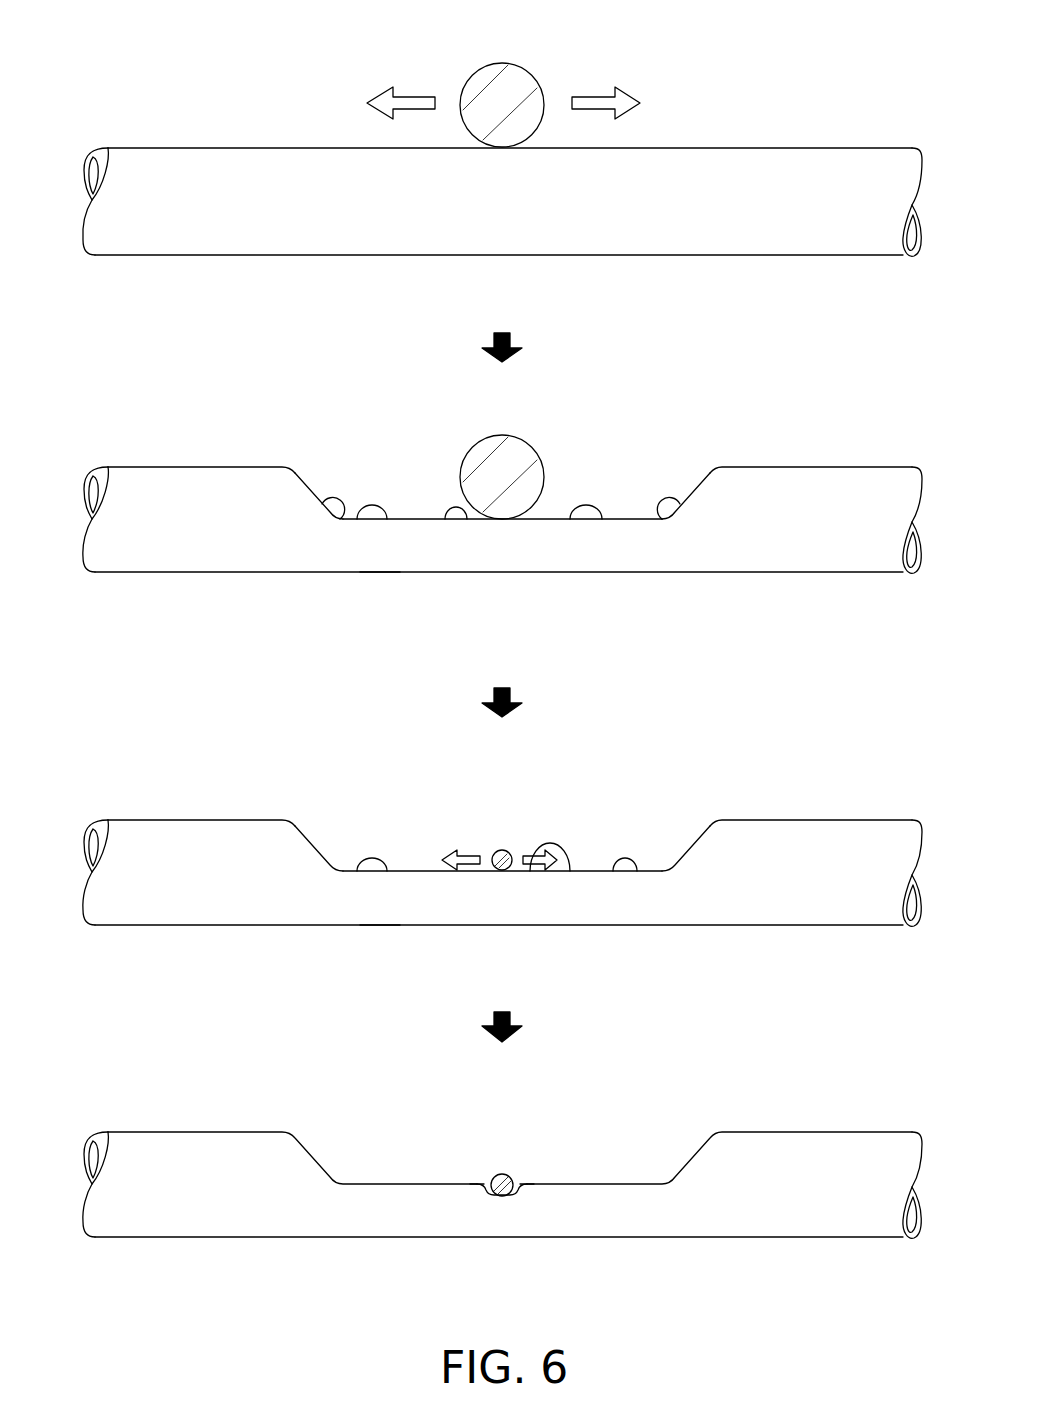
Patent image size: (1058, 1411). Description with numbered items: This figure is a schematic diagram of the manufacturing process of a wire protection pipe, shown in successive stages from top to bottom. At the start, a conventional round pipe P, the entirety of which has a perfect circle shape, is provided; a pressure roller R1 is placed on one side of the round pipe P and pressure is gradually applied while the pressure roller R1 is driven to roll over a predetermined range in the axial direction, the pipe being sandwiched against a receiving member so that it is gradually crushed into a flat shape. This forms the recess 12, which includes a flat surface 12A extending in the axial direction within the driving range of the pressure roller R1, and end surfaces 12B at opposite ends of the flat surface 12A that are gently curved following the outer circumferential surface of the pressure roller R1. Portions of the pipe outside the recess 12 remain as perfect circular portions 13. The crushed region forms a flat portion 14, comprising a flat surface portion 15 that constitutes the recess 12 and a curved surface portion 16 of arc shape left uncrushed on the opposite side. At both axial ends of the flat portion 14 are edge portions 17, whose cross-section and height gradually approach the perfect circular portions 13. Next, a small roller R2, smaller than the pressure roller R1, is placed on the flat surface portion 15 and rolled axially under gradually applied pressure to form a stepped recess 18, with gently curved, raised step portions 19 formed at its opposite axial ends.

The round pipe P is at (726, 167).
The pressure roller R1 is at (514, 85).
The small roller R2 is at (504, 850).
The recess 12 is at (602, 519).
The flat surface 12A is at (445, 519).
The end surfaces 12B is at (340, 519).
The perfect circular portions 13 is at (163, 493).
The flat portion 14 is at (402, 560).
The flat surface portion 15 is at (357, 519).
The curved surface portion 16 is at (380, 558).
The edge portions 17 is at (293, 498).
The stepped recesses 18 is at (508, 1200).
The step portions 19 is at (484, 1183).